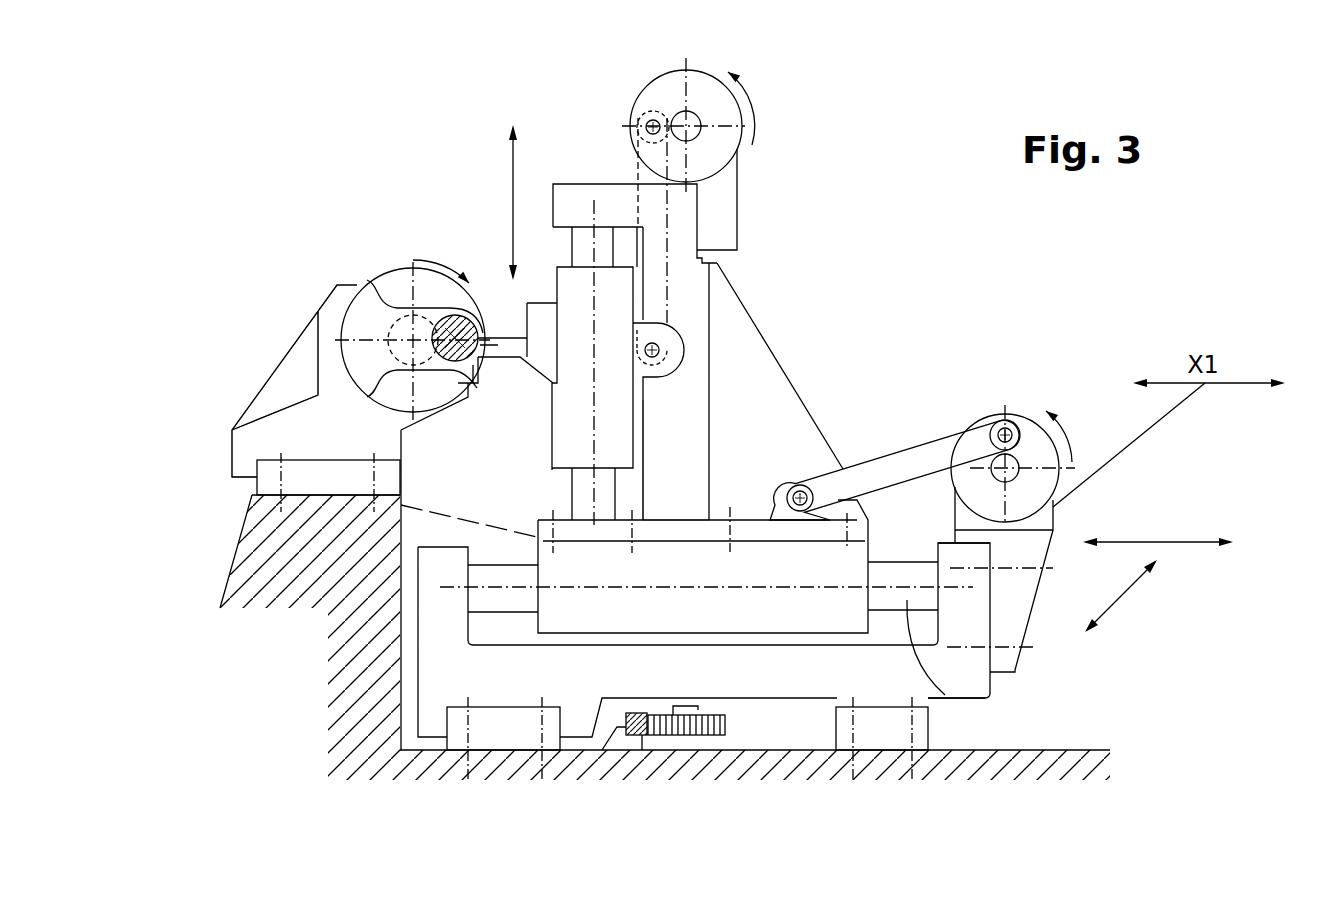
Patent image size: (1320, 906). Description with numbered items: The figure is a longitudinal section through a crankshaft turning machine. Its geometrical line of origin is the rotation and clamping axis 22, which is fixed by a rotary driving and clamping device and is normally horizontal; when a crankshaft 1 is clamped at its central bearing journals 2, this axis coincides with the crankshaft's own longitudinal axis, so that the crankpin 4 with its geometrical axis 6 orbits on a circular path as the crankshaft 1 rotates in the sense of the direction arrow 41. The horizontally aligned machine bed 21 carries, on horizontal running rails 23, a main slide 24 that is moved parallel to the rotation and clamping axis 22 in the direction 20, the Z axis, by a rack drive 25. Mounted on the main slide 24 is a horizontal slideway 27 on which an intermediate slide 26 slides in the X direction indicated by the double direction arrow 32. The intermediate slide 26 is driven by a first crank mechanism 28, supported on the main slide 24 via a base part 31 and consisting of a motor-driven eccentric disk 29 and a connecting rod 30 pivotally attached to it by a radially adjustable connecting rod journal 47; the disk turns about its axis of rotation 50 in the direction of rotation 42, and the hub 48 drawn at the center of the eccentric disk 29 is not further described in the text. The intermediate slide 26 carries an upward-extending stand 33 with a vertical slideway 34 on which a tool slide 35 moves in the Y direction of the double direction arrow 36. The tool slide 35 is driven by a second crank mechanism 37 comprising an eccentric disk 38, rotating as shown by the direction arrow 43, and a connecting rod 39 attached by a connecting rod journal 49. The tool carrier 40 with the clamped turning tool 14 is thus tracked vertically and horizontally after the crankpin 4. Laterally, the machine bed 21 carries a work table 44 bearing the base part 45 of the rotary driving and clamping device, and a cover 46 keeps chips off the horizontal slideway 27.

The crankshaft 1 is at (338, 305).
The central bearing journal 2 is at (403, 300).
The crankpin 4 is at (478, 332).
The geometrical axis 6 is at (462, 366).
The turning tool 14 is at (505, 352).
The direction of movement 20 is at (1128, 588).
The machine bed 21 is at (272, 567).
The rotation and clamping axis 22 is at (400, 346).
The running rails 23 is at (505, 725).
The main slide 24 is at (762, 680).
The rack drive 25 is at (650, 740).
The intermediate slide 26 is at (837, 607).
The slideway 27 is at (938, 700).
The first crank mechanism 28 is at (946, 441).
The eccentric disk 29 is at (1028, 425).
The connecting rod 30 is at (866, 470).
The base part 31 is at (1027, 540).
The double direction arrow 32 is at (1180, 542).
The stand 33 is at (693, 318).
The vertical slideway 34 is at (576, 243).
The tool slide 35 is at (620, 430).
The double direction arrow 36 is at (513, 180).
The second crank mechanism 37 is at (623, 128).
The eccentric disk 38 is at (720, 148).
The connecting rod 39 is at (647, 175).
The tool carrier 40 is at (543, 323).
The direction arrow 41 is at (440, 256).
The direction of rotation 42 is at (1067, 435).
The direction arrow 43 is at (753, 95).
The work table 44 is at (270, 487).
The base part 45 is at (277, 423).
The cover 46 is at (465, 513).
The connecting rod journal 47 is at (1000, 424).
The pulley hub 48 is at (952, 478).
The connecting rod journal 49 is at (648, 118).
The axis of rotation 50 is at (690, 118).